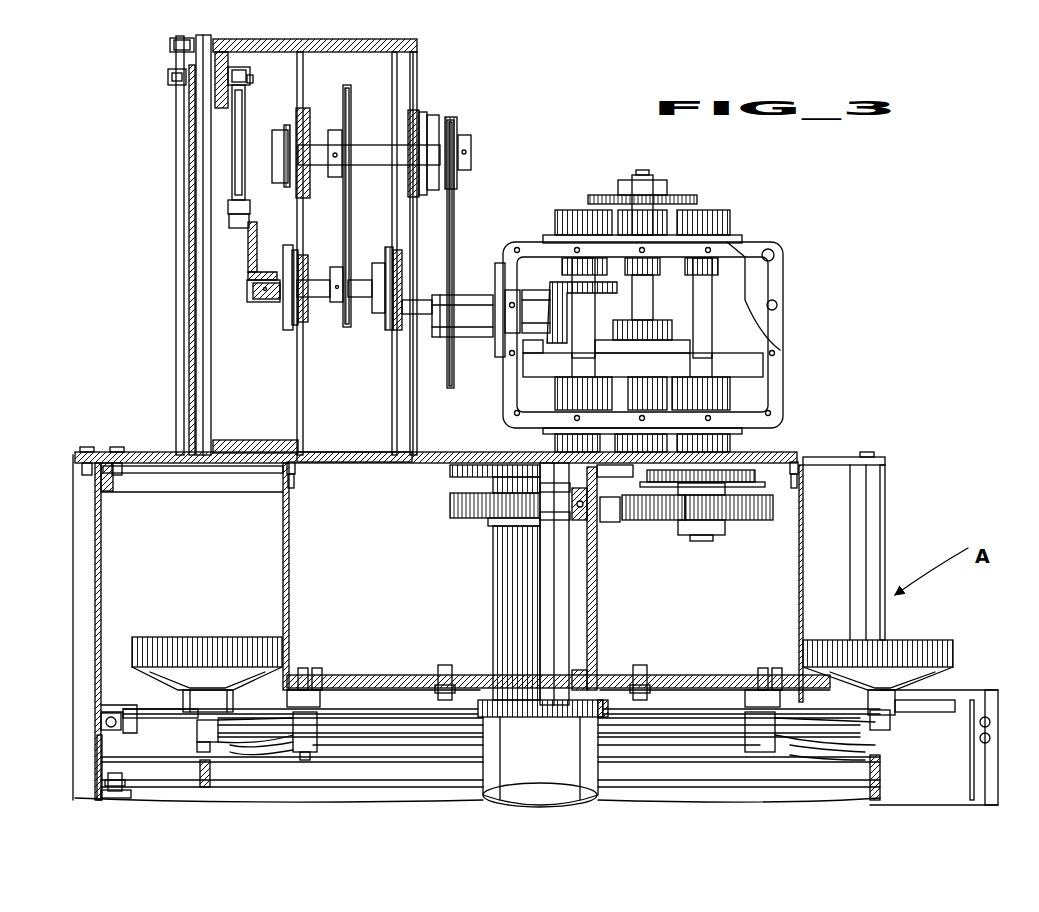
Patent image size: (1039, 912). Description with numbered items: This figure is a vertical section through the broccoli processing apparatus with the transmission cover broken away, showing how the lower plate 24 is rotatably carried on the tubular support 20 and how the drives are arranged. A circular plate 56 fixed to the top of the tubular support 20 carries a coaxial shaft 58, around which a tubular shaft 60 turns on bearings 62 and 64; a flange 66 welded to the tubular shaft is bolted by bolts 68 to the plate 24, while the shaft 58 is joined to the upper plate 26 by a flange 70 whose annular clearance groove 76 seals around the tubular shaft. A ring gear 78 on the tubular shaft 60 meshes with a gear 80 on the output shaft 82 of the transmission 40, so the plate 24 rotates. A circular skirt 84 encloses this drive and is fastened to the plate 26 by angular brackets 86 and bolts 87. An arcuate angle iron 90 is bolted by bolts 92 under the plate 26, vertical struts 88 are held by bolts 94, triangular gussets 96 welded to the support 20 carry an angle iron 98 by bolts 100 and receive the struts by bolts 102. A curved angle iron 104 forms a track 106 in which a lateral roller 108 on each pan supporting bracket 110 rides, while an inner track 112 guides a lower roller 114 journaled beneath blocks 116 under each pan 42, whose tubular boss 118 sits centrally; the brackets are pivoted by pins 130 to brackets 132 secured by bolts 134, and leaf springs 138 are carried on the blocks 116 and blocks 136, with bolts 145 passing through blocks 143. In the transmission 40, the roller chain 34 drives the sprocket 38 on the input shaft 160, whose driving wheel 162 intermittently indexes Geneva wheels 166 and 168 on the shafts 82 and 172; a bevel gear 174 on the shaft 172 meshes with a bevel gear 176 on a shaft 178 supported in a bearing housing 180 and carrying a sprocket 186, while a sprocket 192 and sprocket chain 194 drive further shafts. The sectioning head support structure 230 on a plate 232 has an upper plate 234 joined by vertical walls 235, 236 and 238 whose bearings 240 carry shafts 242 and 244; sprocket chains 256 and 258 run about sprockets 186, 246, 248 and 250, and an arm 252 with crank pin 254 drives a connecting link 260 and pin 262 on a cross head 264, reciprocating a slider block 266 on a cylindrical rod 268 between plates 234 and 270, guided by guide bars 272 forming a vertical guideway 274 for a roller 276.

The tubular support 20 is at (560, 757).
The plate 24 is at (325, 677).
The plate 26 is at (432, 455).
The roller chain 34 is at (693, 195).
The sprocket 38 is at (668, 200).
The transmission 40 is at (760, 250).
The pan 42 is at (200, 650).
The circular plate 56 is at (608, 705).
The shaft 58 is at (560, 578).
The tubular shaft 60 is at (597, 600).
The bearing 62 is at (580, 680).
The bearing 64 is at (582, 500).
The flange 66 is at (608, 685).
The bolts 68 is at (443, 670).
The flange 70 is at (452, 470).
The annular clearance groove 76 is at (630, 495).
The ring gear 78 is at (452, 508).
The gear 80 is at (740, 505).
The output shaft 82 is at (730, 312).
The circular skirt 84 is at (283, 555).
The angular brackets 86 is at (290, 480).
The bolts 87 is at (296, 468).
The vertical struts 88 is at (97, 558).
The arcuate horizontal angle iron 90 is at (108, 470).
The bolts 92 is at (115, 452).
The bolts 94 is at (85, 452).
The gussets 96 is at (375, 800).
The angle iron 98 is at (98, 765).
The bolts 100 is at (105, 795).
The bolts 102 is at (105, 783).
The curved angle iron 104 is at (90, 700).
The curved track 106 is at (100, 715).
The lateral roller 108 is at (100, 723).
The pan supporting bracket 110 is at (145, 690).
The inner track 112 is at (200, 770).
The lower roller 114 is at (195, 748).
The blocks 116 is at (200, 725).
The tubular boss 118 is at (215, 695).
The pins 130 is at (320, 700).
The brackets 132 is at (345, 688).
The bolts 134 is at (316, 672).
The blocks 136 is at (335, 735).
The leaf springs 138 is at (240, 755).
The blocks 143 is at (318, 730).
The bolts 145 is at (308, 760).
The input shaft 160 is at (643, 178).
The driving wheel 162 is at (672, 347).
The Geneva wheel 166 is at (740, 365).
The Geneva wheel 168 is at (540, 365).
The shaft 172 is at (588, 328).
The bevel gear 174 is at (563, 285).
The bevel gear 176 is at (545, 305).
The shaft 178 is at (422, 320).
The bearing housing 180 is at (477, 302).
The sprocket 186 is at (445, 345).
The sprocket 192 is at (740, 470).
The sprocket chain 194 is at (770, 482).
The support structure 230 is at (425, 50).
The plate 232 is at (358, 452).
The upper plate 234 is at (345, 50).
The vertical wall 235 is at (420, 110).
The vertical wall 236 is at (418, 67).
The vertical wall 238 is at (303, 62).
The bearings 240 is at (282, 232).
The shaft 242 is at (364, 152).
The shaft 244 is at (250, 290).
The sprocket 246 is at (456, 148).
The sprocket 248 is at (350, 118).
The sprocket 250 is at (345, 312).
The arm 252 is at (252, 245).
The crank pin 254 is at (230, 218).
The sprocket chain 256 is at (452, 210).
The sprocket chain 258 is at (342, 212).
The connecting link 260 is at (240, 128).
The pin 262 is at (253, 66).
The cross head 264 is at (222, 60).
The slider block 266 is at (190, 137).
The cylindrical rod 268 is at (205, 162).
The plate 270 is at (240, 445).
The guide bars 272 is at (178, 202).
The vertical guideway 274 is at (178, 113).
The roller 276 is at (178, 72).